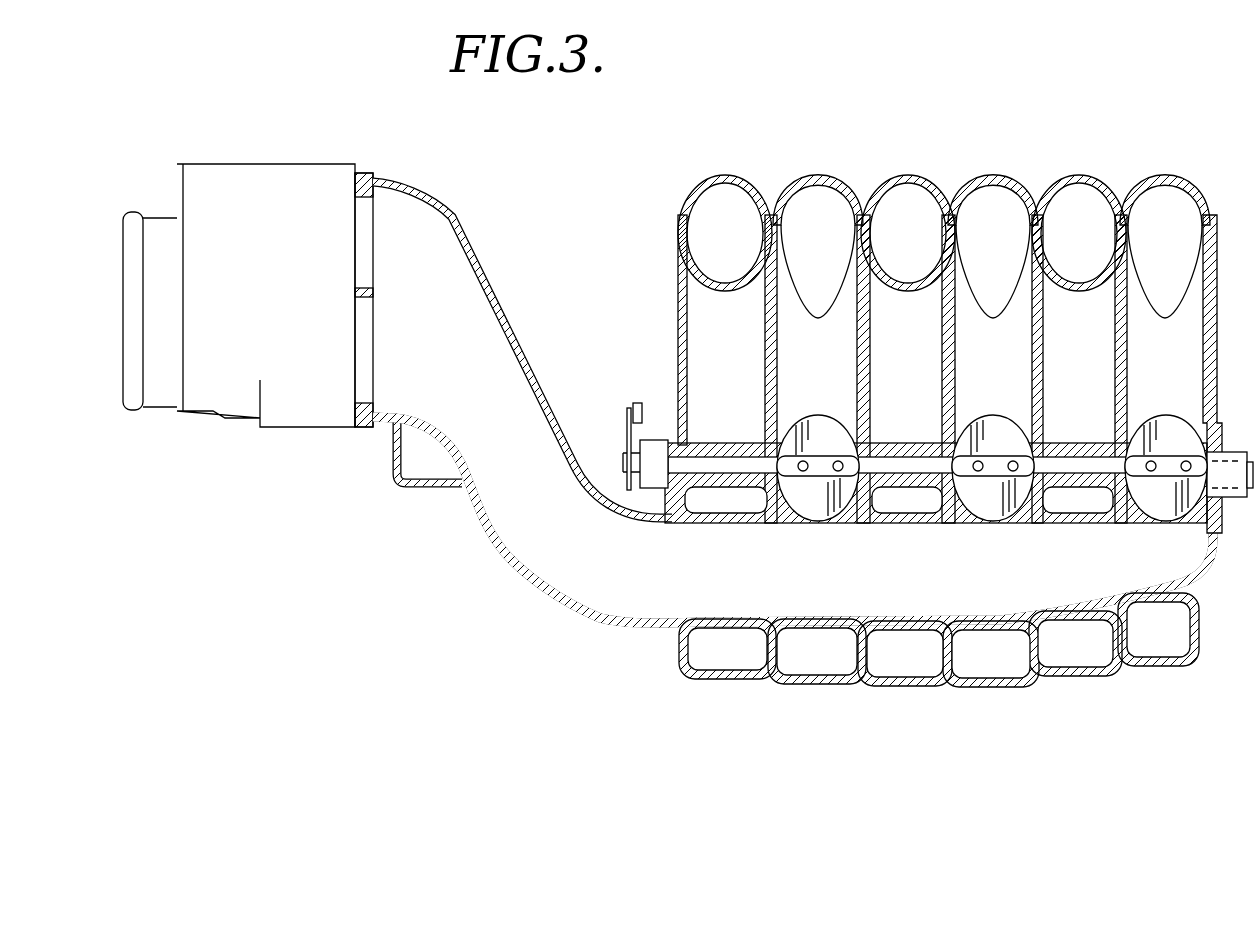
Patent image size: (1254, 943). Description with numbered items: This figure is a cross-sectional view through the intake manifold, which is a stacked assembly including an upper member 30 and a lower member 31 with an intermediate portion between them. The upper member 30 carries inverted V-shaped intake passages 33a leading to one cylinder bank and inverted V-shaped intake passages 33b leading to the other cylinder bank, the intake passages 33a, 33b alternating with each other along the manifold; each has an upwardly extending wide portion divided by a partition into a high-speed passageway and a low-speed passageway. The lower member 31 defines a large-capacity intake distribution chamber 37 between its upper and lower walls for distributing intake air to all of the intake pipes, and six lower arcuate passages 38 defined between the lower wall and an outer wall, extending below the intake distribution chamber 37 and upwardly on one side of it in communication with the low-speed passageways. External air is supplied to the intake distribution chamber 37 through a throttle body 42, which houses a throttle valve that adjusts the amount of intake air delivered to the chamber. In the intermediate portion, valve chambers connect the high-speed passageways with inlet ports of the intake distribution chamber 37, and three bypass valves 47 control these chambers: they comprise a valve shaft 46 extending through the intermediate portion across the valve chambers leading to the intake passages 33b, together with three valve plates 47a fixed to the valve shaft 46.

The upper member 30 is at (673, 197).
The lower member 31 is at (636, 629).
The intake passages 33a is at (887, 200).
The intake passages 33b is at (1155, 207).
The intake distribution chamber 37 is at (908, 585).
The lower arcuate passages 38 is at (793, 657).
The throttle body 42 is at (320, 178).
The valve shaft 46 is at (729, 466).
The bypass valves 47 is at (811, 416).
The valve plates 47a is at (1160, 515).